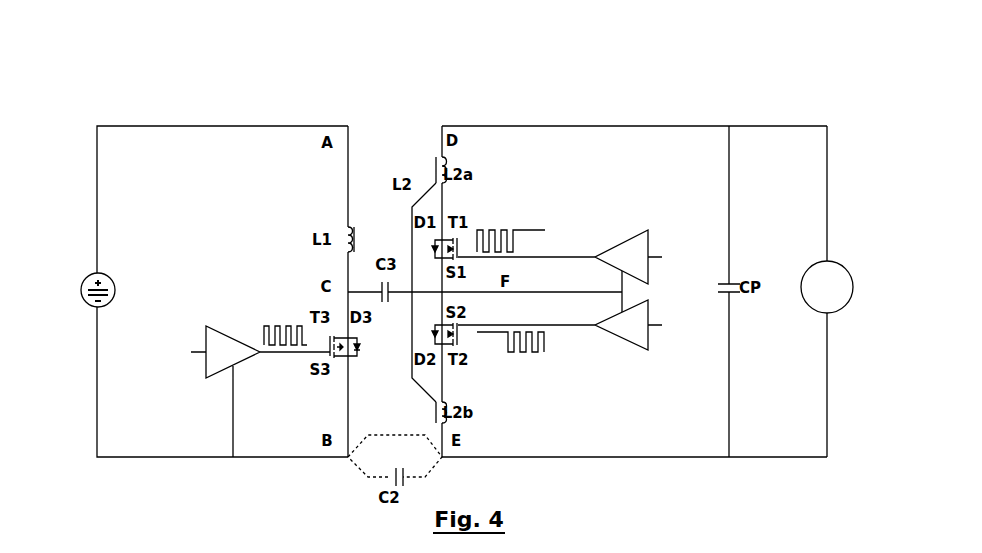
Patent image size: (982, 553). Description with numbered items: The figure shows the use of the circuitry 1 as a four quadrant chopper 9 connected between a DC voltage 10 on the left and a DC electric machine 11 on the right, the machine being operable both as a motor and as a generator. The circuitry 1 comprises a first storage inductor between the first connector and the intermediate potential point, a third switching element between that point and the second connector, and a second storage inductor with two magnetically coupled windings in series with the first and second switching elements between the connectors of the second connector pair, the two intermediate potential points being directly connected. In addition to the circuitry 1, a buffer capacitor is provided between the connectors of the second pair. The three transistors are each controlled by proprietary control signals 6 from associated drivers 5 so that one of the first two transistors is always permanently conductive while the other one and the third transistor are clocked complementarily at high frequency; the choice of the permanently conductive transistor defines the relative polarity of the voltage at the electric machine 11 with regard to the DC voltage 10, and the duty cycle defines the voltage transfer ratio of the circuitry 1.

The circuitry 1 is at (476, 108).
The four quadrant chopper 9 is at (803, 103).
The DC voltage 10 is at (90, 277).
The DC electric machine 11 is at (842, 253).
The driver 5 is at (213, 373).
The control signal 6 is at (278, 325).